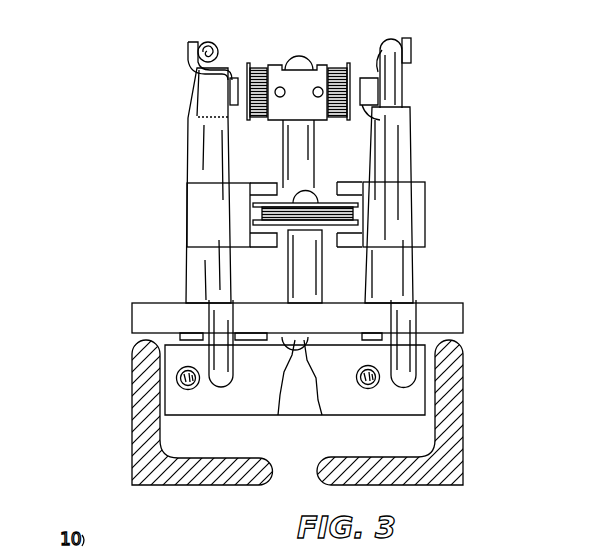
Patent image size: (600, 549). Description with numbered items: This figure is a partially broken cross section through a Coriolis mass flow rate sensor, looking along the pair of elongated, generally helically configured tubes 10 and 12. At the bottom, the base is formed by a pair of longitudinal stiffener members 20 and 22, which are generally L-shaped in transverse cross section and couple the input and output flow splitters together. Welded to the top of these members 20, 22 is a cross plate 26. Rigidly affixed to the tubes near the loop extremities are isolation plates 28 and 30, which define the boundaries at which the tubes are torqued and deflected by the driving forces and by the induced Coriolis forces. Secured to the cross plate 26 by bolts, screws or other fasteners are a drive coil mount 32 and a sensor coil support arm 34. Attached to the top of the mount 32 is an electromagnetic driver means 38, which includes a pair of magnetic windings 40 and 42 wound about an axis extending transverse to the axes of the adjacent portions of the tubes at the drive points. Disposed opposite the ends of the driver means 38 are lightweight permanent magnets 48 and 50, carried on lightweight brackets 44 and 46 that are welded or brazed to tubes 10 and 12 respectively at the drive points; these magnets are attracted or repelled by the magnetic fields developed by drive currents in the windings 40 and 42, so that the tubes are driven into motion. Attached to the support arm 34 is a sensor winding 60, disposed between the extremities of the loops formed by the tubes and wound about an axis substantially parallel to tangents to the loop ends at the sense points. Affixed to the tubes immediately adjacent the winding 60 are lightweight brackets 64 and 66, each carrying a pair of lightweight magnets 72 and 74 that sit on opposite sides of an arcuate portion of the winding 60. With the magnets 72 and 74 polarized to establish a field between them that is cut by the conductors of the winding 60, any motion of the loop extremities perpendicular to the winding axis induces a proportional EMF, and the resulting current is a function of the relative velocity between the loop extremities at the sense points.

The tube 10 is at (212, 42).
The tube 12 is at (394, 40).
The longitudinal stiffener member 20 is at (453, 440).
The longitudinal stiffener member 22 is at (137, 420).
The cross plate 26 is at (460, 322).
The isolation plate 28 is at (176, 393).
The isolation plate 30 is at (256, 415).
The drive coil mount 32 is at (305, 157).
The sensor coil support arm 34 is at (312, 292).
The electromagnetic driver means 38 is at (327, 63).
The magnetic winding 40 is at (340, 67).
The magnetic winding 42 is at (258, 66).
The bracket 44 is at (188, 56).
The bracket 46 is at (412, 50).
The permanent magnet 48 is at (228, 110).
The permanent magnet 50 is at (366, 122).
The sensor winding 60 is at (347, 218).
The bracket 64 is at (205, 215).
The bracket 66 is at (415, 228).
The magnet 72 is at (258, 188).
The magnet 74 is at (262, 240).